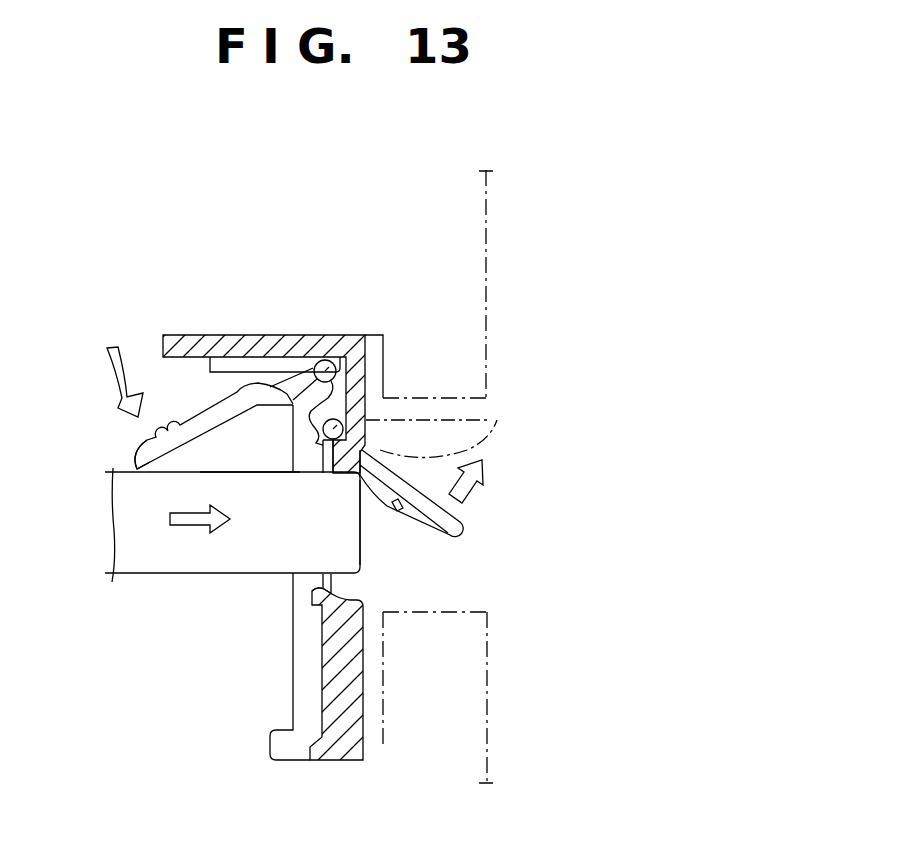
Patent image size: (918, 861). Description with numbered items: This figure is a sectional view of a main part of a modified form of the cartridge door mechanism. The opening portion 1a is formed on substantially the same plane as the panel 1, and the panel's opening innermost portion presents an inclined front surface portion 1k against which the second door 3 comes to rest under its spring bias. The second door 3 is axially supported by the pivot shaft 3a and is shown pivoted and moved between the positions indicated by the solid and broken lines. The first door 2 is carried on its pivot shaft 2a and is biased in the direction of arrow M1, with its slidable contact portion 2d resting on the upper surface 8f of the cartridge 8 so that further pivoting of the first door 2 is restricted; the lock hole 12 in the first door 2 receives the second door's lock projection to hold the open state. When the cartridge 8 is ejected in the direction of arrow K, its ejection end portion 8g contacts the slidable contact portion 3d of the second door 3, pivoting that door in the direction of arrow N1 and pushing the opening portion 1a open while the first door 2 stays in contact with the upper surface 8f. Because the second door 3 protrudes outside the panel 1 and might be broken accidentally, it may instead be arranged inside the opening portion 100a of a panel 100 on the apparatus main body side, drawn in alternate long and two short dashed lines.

The panel 1 is at (331, 768).
The opening portion 1a is at (333, 580).
The inclined front surface portion 1k is at (340, 593).
The panel 100 is at (492, 285).
The opening portion 100a is at (480, 590).
The first door 2 is at (181, 429).
The pivot shaft 2a is at (340, 416).
The slidable contact portion 2d is at (168, 468).
The second door 3 is at (497, 420).
The pivot shaft 3a is at (326, 369).
The slidable contact portion 3d is at (384, 508).
The lock hole 12 is at (272, 393).
The cartridge 8 is at (146, 553).
The upper surface 8f is at (220, 468).
The ejection end portion 8g is at (358, 519).
The ejection direction arrow K is at (207, 533).
The first door biasing direction arrow M1 is at (113, 383).
The second door pivoting direction arrow N1 is at (467, 497).